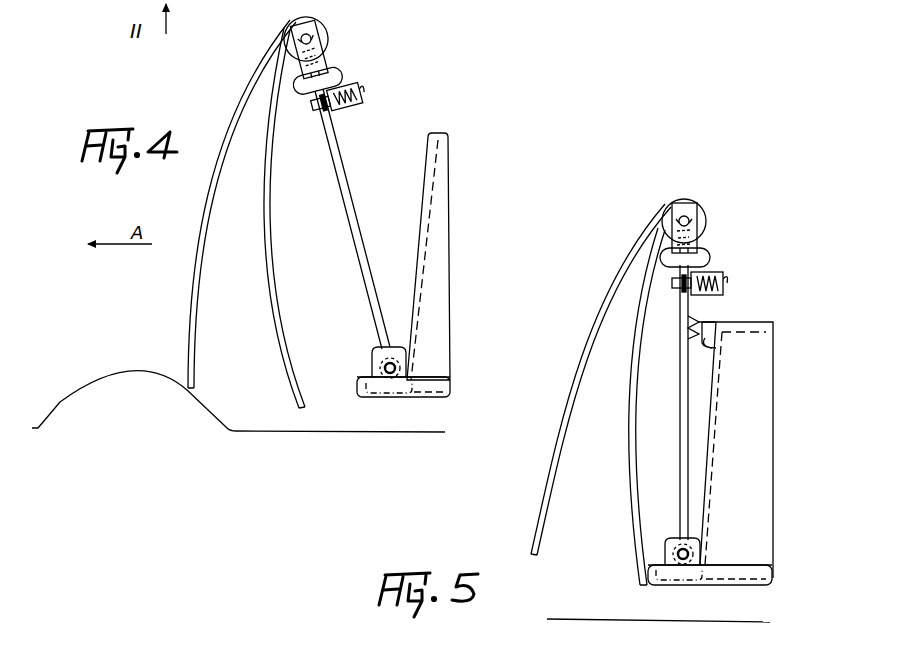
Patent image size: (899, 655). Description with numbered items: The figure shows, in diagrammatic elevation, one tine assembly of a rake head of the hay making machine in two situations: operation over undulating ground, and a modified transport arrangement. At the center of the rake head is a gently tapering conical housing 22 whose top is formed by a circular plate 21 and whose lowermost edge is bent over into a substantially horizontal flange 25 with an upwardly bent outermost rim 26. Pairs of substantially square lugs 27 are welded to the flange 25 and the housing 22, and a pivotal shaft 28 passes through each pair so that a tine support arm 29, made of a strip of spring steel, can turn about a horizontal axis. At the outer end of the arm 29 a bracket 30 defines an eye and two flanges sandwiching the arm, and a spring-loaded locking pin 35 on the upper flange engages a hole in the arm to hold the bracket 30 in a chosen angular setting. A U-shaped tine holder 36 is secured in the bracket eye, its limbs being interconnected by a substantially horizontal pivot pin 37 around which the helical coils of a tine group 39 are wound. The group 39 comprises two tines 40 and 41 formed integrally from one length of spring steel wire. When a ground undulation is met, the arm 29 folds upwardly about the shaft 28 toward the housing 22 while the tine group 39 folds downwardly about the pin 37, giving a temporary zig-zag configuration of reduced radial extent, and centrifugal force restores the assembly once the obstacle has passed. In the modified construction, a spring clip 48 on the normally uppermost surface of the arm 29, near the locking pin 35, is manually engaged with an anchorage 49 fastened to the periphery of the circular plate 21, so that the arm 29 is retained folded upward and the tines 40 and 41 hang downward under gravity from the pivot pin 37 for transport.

In FIG. 4, the circular plate 21 is at (443, 133).
In FIG. 4, the housing 22 is at (430, 170).
In FIG. 5, the housing 22 is at (715, 425).
In FIG. 4, the flange 25 is at (400, 398).
In FIG. 5, the flange 25 is at (686, 587).
In FIG. 4, the outermost rim 26 is at (361, 384).
In FIG. 5, the outermost rim 26 is at (710, 575).
In FIG. 4, the lugs 27 is at (374, 352).
In FIG. 5, the lugs 27 is at (672, 540).
In FIG. 4, the pivotal shaft 28 is at (385, 368).
In FIG. 5, the pivotal shaft 28 is at (690, 560).
In FIG. 4, the tine support arm 29 is at (361, 233).
In FIG. 5, the tine support arm 29 is at (682, 452).
In FIG. 4, the bracket 30 is at (306, 96).
In FIG. 5, the bracket 30 is at (705, 243).
In FIG. 4, the spring-loaded locking pin 35 is at (366, 90).
In FIG. 5, the spring-loaded locking pin 35 is at (719, 271).
In FIG. 4, the tine holder 36 is at (327, 60).
In FIG. 5, the tine holder 36 is at (684, 228).
In FIG. 4, the pivot pin 37 is at (323, 45).
In FIG. 5, the pivot pin 37 is at (686, 205).
In FIG. 4, the tine group 39 is at (248, 250).
In FIG. 5, the tine group 39 is at (616, 406).
In FIG. 4, the tine 40 is at (188, 326).
In FIG. 5, the tine 40 is at (537, 486).
In FIG. 4, the tine 41 is at (292, 350).
In FIG. 5, the tine 41 is at (632, 508).
In FIG. 5, the spring clip 48 is at (703, 322).
In FIG. 5, the anchorage 49 is at (713, 350).